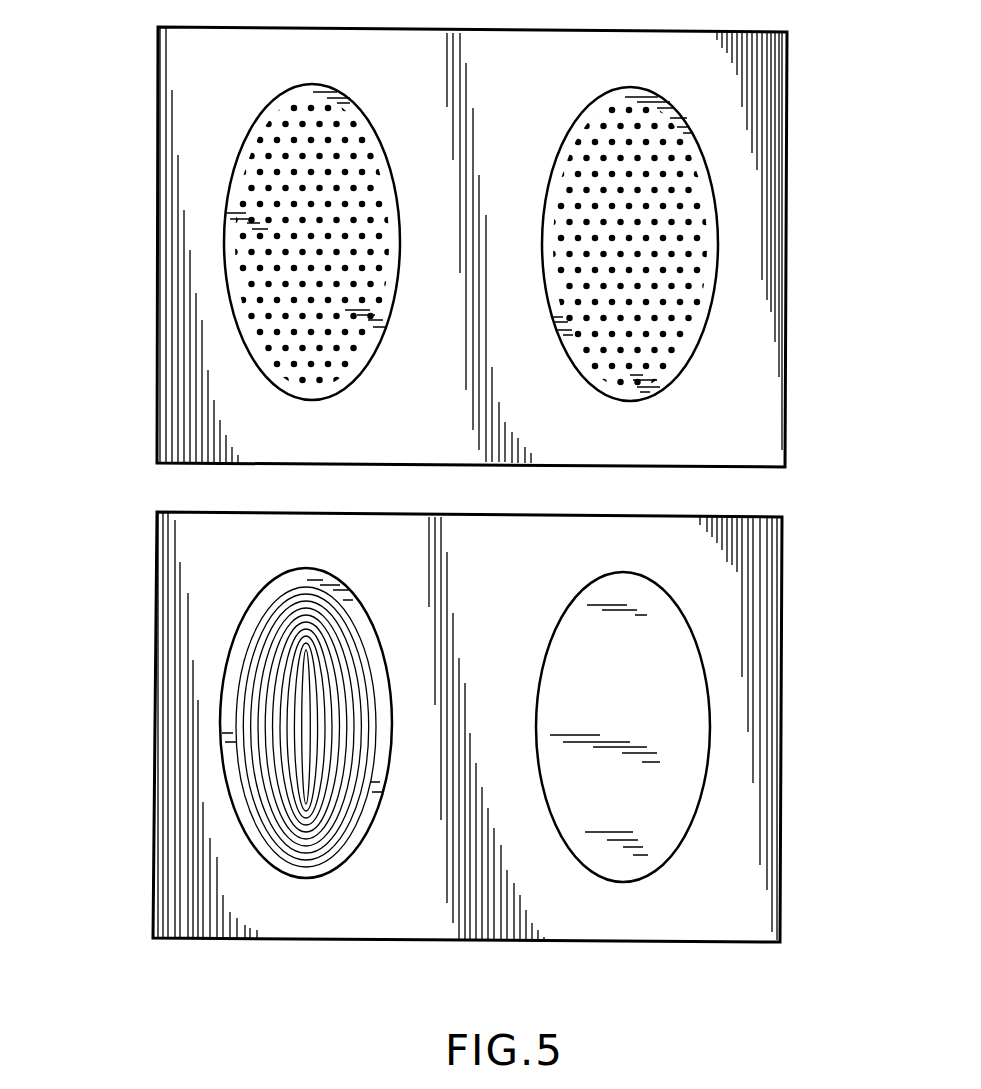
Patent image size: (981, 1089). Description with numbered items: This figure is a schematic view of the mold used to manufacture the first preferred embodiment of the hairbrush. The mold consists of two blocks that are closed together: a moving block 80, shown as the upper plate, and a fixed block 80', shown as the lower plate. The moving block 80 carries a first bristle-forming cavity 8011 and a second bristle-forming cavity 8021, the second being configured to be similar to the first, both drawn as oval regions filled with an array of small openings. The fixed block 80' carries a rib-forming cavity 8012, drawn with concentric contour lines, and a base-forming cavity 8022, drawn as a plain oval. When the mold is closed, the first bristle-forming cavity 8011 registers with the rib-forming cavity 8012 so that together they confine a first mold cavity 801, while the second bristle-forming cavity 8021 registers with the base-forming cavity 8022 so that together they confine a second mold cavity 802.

The moving block 80 is at (500, 247).
The fixed block 80' is at (494, 727).
The first mold cavity 801 is at (83, 346).
The first bristle-forming cavity 8011 is at (250, 343).
The rib-forming cavity 8012 is at (250, 623).
The second mold cavity 802 is at (793, 540).
The second bristle-forming cavity 8021 is at (695, 325).
The base-forming cavity 8022 is at (682, 623).